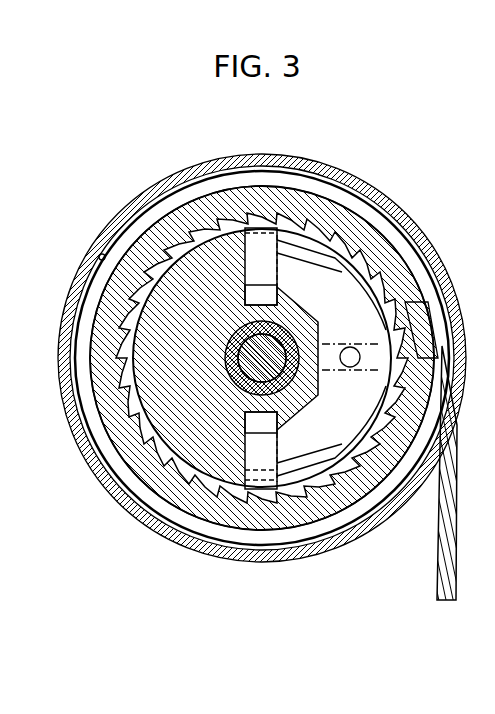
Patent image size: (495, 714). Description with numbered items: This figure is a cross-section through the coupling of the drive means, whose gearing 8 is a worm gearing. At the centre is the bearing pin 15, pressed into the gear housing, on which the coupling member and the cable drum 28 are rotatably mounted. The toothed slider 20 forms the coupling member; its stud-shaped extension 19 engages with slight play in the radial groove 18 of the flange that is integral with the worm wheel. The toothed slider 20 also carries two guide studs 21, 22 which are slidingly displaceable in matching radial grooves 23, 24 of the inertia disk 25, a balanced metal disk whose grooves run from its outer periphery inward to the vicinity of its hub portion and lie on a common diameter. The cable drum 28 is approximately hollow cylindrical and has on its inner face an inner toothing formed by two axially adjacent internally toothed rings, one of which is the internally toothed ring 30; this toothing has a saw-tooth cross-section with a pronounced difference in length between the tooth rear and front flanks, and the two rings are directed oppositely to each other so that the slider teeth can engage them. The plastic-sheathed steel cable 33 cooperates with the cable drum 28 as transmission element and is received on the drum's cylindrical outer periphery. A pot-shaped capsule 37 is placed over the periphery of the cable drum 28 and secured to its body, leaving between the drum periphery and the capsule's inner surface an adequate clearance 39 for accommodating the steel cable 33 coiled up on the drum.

The gearing 8 is at (389, 173).
The bearing pin 15 is at (272, 343).
The radial groove 18 is at (372, 355).
The stud-shaped extension 19 is at (350, 368).
The toothed slider 20 is at (365, 340).
The guide stud 21 is at (253, 450).
The guide stud 22 is at (257, 258).
The radial groove 23 is at (270, 418).
The radial groove 24 is at (243, 273).
The inertia disk 25 is at (175, 425).
The cable drum 28 is at (342, 500).
The internally toothed ring 30 is at (357, 318).
The plastic-sheathed steel cable 33 is at (457, 507).
The pot-shaped capsule 37 is at (118, 222).
The clearance 39 is at (102, 254).